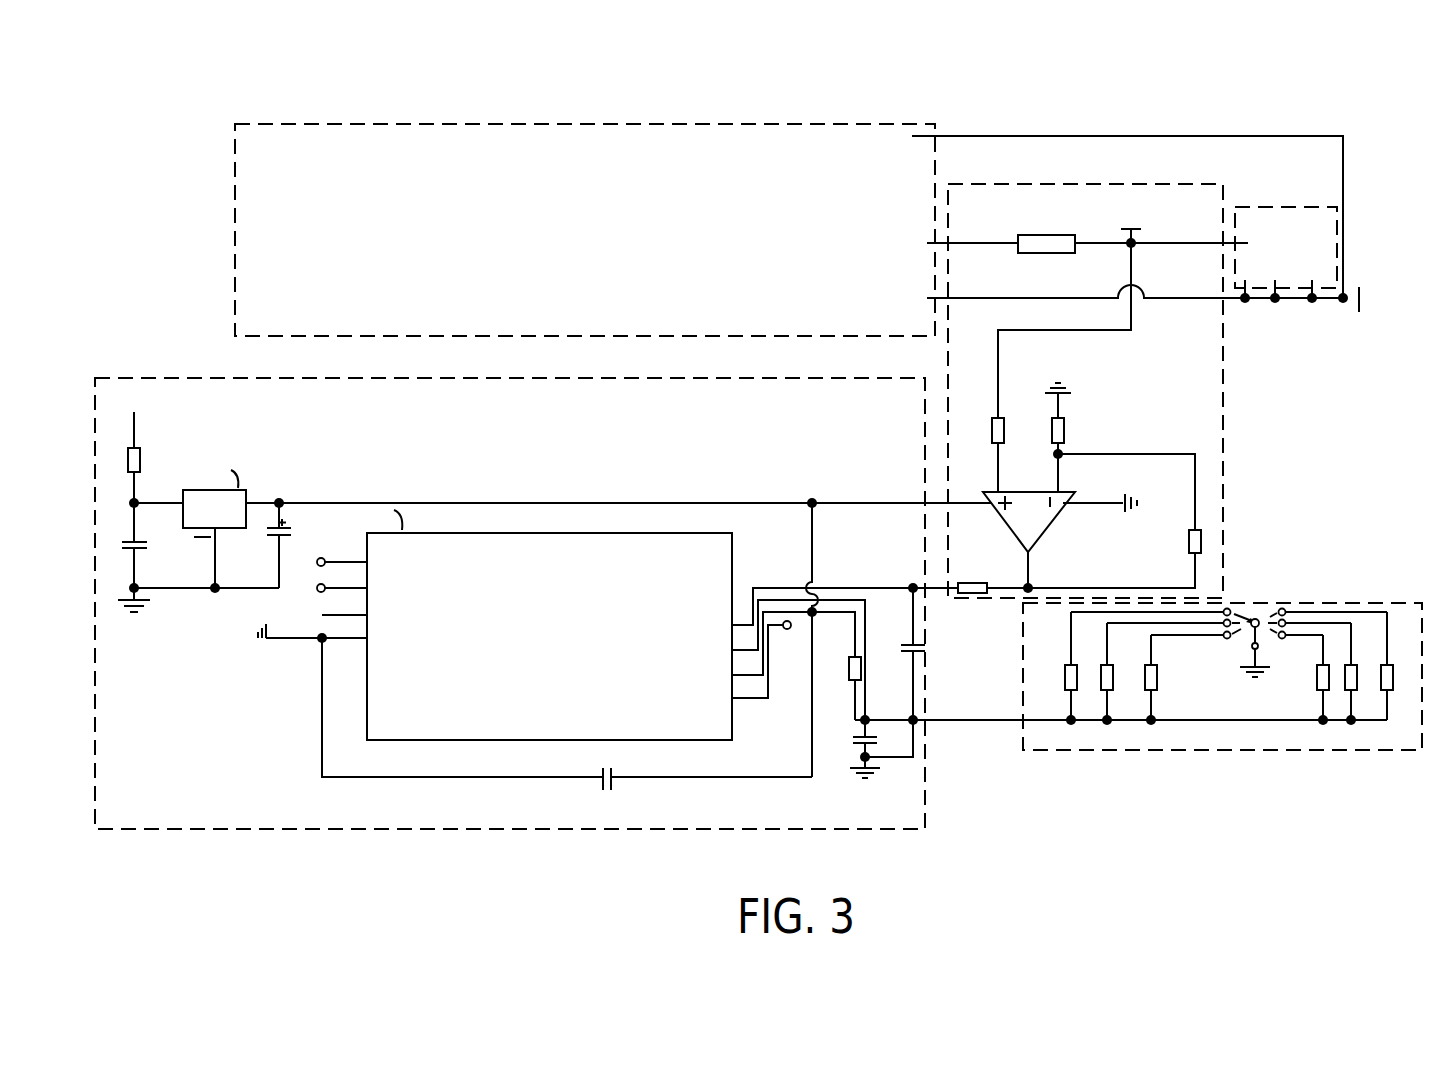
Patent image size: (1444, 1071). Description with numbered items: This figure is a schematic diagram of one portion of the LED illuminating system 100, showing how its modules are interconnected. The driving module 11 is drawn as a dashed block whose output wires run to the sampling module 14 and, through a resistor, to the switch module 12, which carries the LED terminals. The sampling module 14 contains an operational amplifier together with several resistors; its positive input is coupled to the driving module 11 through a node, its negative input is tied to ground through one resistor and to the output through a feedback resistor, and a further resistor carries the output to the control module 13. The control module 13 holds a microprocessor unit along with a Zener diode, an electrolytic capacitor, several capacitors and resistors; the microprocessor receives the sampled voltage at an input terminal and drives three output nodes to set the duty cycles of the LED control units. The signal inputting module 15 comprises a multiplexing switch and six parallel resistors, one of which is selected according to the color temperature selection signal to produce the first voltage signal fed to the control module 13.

The LED illuminating system 100 is at (1320, 118).
The driving module 11 is at (910, 125).
The switch module 12 is at (1275, 208).
The control module 13 is at (148, 379).
The sampling module 14 is at (1223, 186).
The signal inputting module 15 is at (1357, 604).